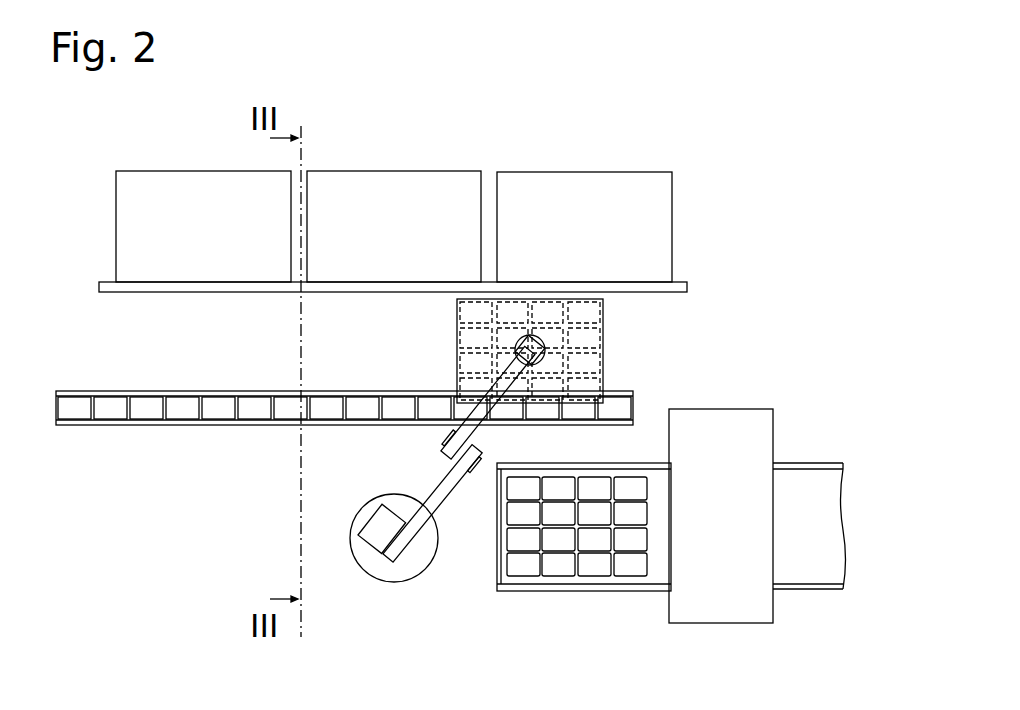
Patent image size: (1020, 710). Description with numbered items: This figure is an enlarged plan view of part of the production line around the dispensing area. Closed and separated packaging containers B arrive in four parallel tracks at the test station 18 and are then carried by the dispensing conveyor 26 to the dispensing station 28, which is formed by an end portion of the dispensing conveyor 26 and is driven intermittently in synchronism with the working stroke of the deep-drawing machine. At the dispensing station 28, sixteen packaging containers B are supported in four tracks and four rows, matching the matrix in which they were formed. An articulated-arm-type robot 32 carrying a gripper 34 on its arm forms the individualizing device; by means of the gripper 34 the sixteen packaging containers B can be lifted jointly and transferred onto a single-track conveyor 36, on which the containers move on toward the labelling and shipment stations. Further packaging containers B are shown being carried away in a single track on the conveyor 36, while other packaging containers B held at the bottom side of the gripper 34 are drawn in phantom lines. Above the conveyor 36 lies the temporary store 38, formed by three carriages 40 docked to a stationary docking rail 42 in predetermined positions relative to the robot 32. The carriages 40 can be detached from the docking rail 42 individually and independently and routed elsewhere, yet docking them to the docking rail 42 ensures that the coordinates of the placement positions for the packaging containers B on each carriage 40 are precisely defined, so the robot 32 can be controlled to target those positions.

The test station 18 is at (750, 425).
The dispensing conveyor 26 is at (808, 493).
The dispensing station 28 is at (596, 590).
The articulated-arm-type robot 32 is at (392, 570).
The gripper 34 is at (607, 347).
The single-track conveyor 36 is at (220, 428).
The temporary store 38 is at (448, 236).
The carriage 40 is at (155, 183).
The docking rail 42 is at (152, 293).
The packaging container B is at (477, 312).